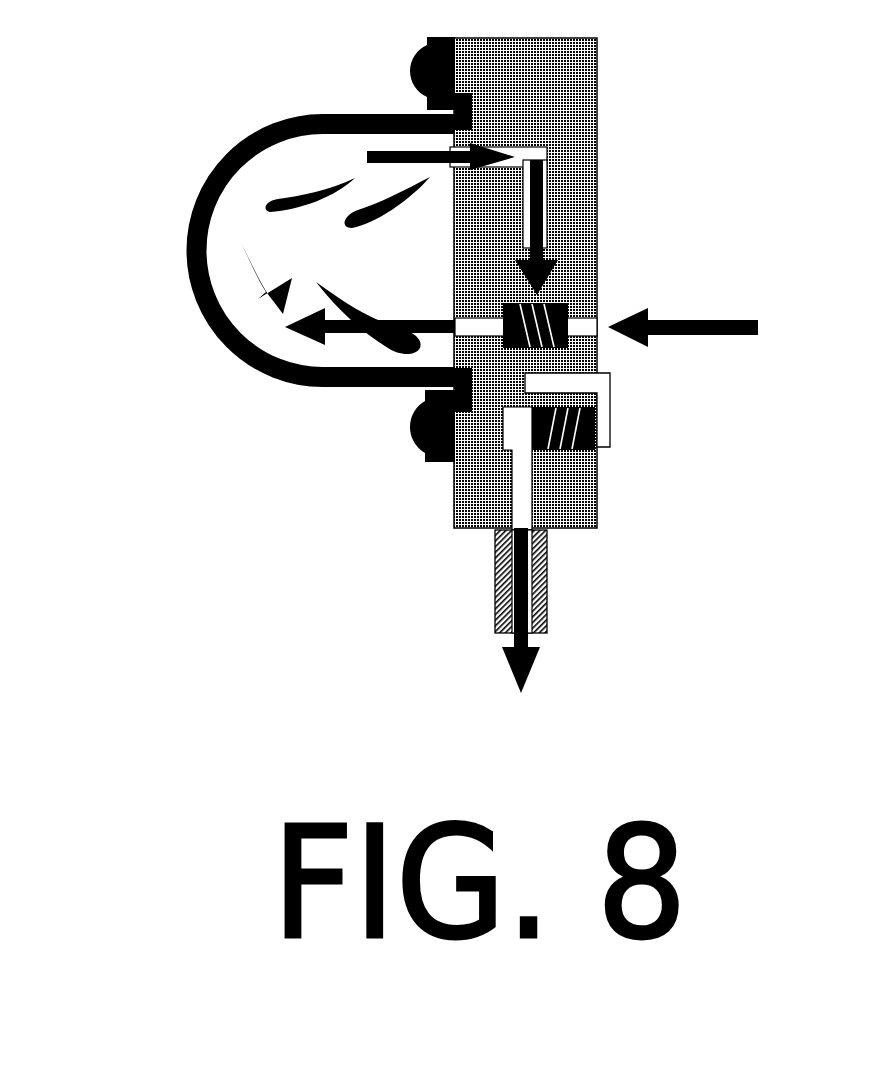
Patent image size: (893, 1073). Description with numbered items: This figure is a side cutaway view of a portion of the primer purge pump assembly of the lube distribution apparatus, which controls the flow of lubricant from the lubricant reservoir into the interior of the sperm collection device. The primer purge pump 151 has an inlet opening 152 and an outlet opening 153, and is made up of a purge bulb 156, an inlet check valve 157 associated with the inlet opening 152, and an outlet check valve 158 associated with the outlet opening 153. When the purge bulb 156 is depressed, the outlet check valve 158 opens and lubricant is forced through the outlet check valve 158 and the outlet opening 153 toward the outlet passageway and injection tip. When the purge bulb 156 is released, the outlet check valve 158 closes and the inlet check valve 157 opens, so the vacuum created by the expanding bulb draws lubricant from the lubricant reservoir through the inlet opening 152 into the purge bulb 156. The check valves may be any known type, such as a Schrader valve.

The primer purge pump 151 is at (230, 155).
The inlet opening 152 is at (607, 333).
The outlet opening 153 is at (543, 637).
The purge bulb 156 is at (265, 305).
The inlet check valve 157 is at (565, 302).
The outlet check valve 158 is at (600, 445).